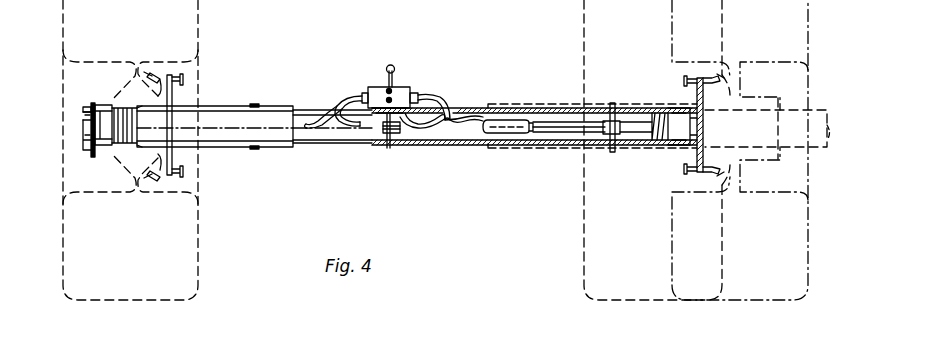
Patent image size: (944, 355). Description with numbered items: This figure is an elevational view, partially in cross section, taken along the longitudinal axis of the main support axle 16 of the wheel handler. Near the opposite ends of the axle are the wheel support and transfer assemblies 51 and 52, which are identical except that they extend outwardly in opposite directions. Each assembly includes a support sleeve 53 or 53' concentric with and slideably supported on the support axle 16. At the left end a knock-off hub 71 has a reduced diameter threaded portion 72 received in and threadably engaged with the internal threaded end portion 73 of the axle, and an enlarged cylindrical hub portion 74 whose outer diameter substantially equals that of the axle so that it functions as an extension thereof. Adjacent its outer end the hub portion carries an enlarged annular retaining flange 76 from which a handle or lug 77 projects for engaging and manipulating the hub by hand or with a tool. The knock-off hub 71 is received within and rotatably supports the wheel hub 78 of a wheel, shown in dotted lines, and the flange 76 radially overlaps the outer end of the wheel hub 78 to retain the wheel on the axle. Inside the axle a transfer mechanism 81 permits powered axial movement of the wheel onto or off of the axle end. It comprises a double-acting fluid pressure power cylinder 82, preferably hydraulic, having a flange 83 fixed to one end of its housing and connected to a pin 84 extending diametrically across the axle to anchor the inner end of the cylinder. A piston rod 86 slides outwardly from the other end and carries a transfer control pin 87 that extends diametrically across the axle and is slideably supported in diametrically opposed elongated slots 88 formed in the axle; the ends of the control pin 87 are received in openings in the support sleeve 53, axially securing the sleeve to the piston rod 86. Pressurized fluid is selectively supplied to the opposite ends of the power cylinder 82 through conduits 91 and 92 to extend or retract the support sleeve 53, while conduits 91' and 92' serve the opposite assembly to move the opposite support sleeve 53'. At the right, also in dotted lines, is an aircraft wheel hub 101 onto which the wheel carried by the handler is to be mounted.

The main support axle 16 is at (330, 136).
The wheel support and transfer assembly 51 is at (648, 100).
The wheel support and transfer assembly 52 is at (210, 153).
The support sleeve 53 is at (659, 139).
The support sleeve 53' is at (196, 120).
The knock-off hub 71 is at (86, 101).
The reduced diameter threaded portion 72 is at (110, 128).
The internal threaded end portion 73 is at (641, 148).
The enlarged cylindrical hub portion 74 is at (82, 140).
The annular retaining flange 76 is at (86, 112).
The handle or lug 77 is at (82, 122).
The wheel hub 78 is at (84, 99).
The transfer mechanism 81 is at (488, 150).
The fluid pressure power cylinder 82 is at (466, 134).
The flange 83 is at (383, 128).
The pin 84 is at (391, 150).
The piston rod 86 is at (573, 128).
The transfer control pin 87 is at (611, 105).
The elongated slots 88 is at (554, 104).
The conduit 91 is at (437, 90).
The conduit 91' is at (331, 82).
The conduit 92 is at (451, 94).
The conduit 92' is at (321, 87).
The aircraft wheel hub 101 is at (785, 122).